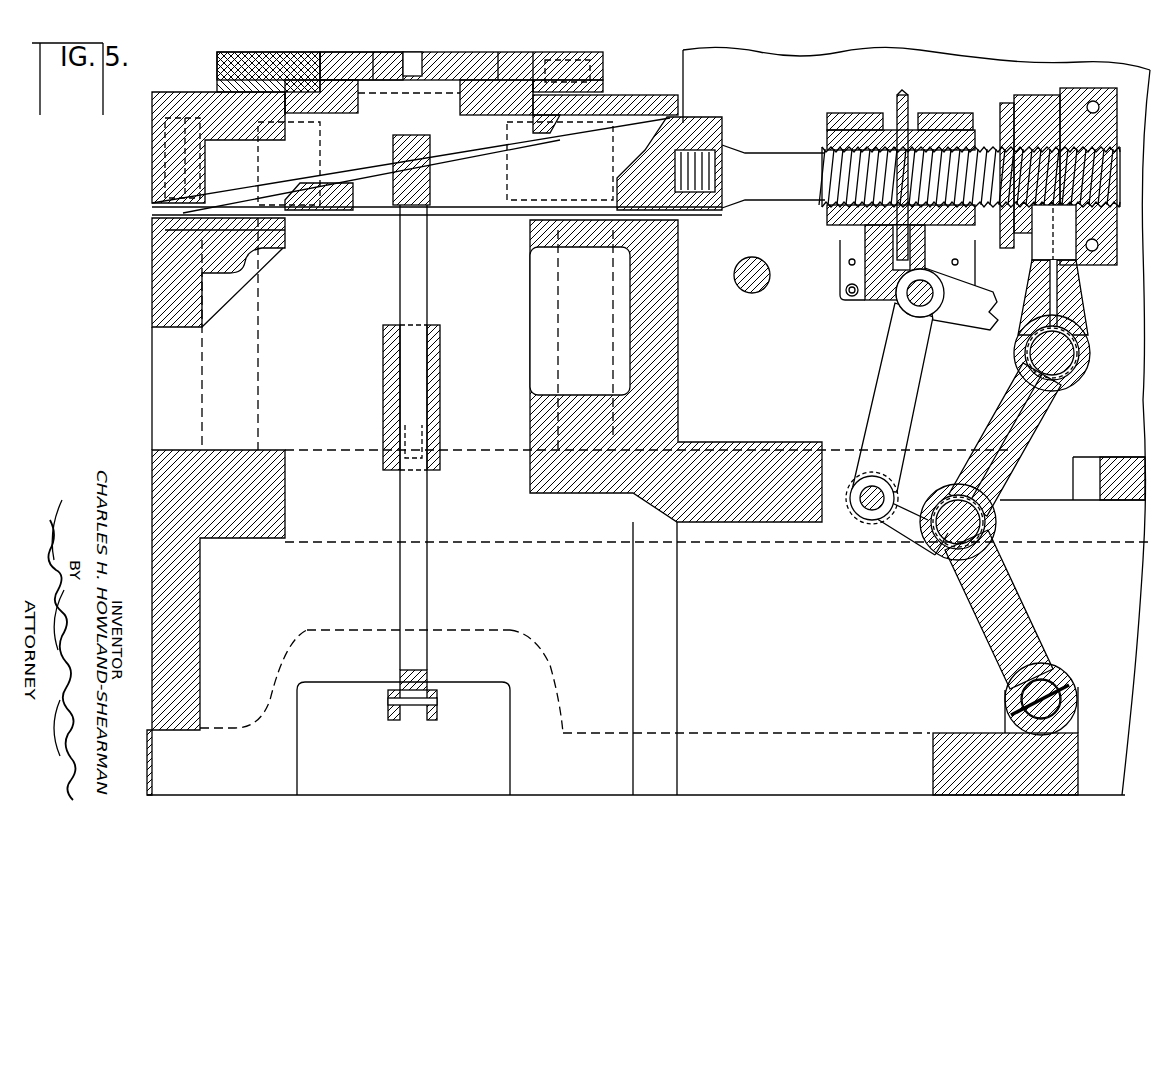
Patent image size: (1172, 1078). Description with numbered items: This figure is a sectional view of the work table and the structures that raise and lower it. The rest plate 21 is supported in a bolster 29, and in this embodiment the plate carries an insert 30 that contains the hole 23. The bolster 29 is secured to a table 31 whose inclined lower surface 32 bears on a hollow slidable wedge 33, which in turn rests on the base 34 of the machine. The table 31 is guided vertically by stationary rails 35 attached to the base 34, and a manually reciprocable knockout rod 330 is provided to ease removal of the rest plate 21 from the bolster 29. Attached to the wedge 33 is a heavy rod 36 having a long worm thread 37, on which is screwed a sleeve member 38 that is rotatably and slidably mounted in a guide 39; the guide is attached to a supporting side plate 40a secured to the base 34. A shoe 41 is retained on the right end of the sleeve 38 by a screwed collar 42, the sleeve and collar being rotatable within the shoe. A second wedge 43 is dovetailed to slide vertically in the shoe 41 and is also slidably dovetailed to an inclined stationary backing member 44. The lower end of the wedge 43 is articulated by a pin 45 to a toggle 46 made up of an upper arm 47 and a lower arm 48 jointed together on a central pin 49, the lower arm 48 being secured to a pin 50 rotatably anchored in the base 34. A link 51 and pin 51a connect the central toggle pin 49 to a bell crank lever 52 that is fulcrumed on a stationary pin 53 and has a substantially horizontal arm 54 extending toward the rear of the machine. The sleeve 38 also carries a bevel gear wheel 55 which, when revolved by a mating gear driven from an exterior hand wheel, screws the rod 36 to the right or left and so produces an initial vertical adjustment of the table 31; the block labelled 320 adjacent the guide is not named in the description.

The rest plate 21 is at (468, 53).
The hole 23 is at (420, 54).
The bolster 29 is at (604, 72).
The insert 30 is at (405, 53).
The table 31 is at (188, 92).
The inclined lower surface 32 is at (470, 158).
The hollow slidable wedge 33 is at (700, 118).
The base 34 is at (152, 253).
The stationary rails 35 is at (258, 298).
The knockout rod 330 is at (430, 270).
The heavy rod 36 is at (776, 152).
The worm thread 37 is at (822, 198).
The sleeve member 38 is at (895, 112).
The guide 39 is at (855, 113).
The bevel gear wheel 55 is at (905, 93).
The nut block 320 is at (940, 113).
The screwed collar 42 is at (1003, 112).
The shoe 41 is at (1022, 96).
The supporting side plate 40a is at (918, 60).
The inclined stationary backing member 44 is at (1112, 238).
The second wedge 43 is at (1082, 298).
The pin 45 is at (1090, 355).
The upper arm 47 is at (1046, 428).
The toggle 46 is at (997, 522).
The lower arm 48 is at (1023, 632).
The pin 50 is at (1063, 681).
The pin 49 is at (935, 552).
The link 51 is at (890, 530).
The pin 51a is at (862, 504).
The bell crank lever 52 is at (886, 396).
The stationary pin 53 is at (907, 300).
The horizontal arm 54 is at (975, 328).